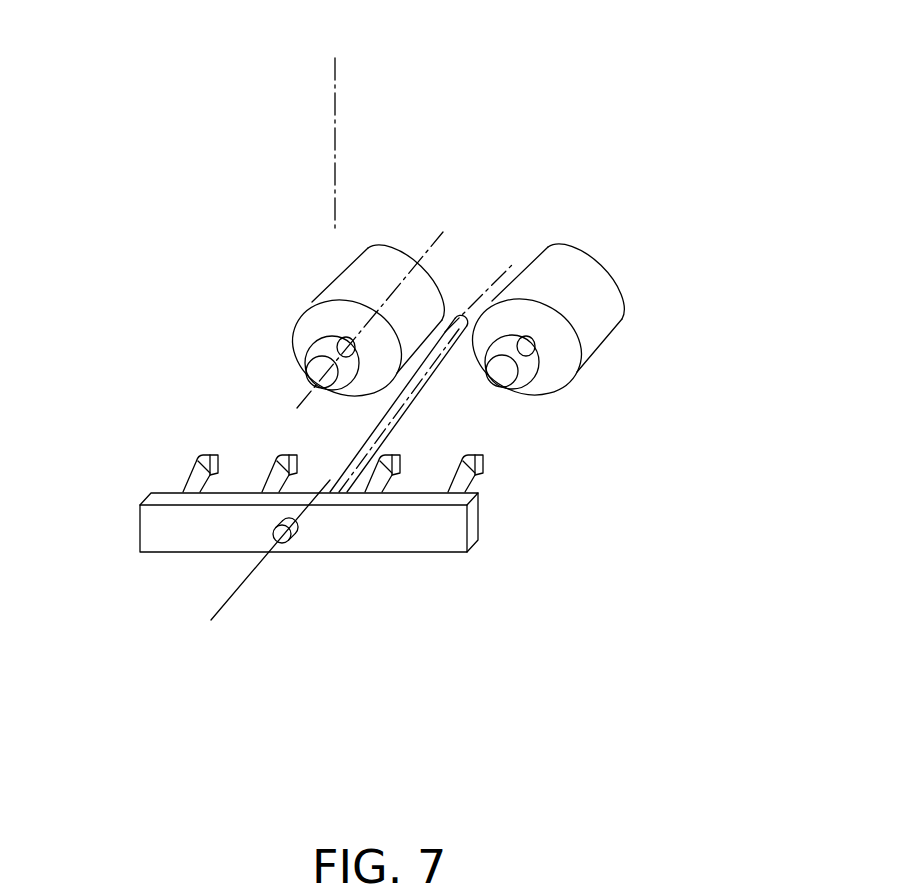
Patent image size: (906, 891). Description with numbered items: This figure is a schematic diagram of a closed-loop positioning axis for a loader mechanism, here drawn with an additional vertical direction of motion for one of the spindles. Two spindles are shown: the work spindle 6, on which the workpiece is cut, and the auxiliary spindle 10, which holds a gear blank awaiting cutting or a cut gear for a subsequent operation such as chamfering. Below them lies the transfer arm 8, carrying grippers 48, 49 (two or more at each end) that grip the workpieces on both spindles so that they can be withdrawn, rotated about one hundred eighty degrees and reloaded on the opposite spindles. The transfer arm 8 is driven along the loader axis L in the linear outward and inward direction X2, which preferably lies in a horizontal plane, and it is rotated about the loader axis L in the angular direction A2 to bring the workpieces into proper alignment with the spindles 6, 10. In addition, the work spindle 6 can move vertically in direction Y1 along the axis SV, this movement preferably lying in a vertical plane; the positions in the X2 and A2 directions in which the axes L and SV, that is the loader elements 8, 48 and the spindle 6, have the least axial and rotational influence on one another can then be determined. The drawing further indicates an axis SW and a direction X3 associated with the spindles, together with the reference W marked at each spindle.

The work spindle 6 is at (375, 258).
The auxiliary spindle 10 is at (580, 272).
The transfer arm 8 is at (407, 533).
The gripper 48 is at (193, 462).
The gripper 49 is at (484, 471).
The shaft W is at (316, 367).
The loader axis L is at (503, 277).
The axis Sv SV is at (336, 75).
The pivot axis SW is at (443, 230).
The vertical direction of motion Y1 is at (255, 315).
The linear movement direction X2 is at (175, 663).
The movement direction X3 is at (642, 355).
The rotary movement direction A2 is at (194, 633).